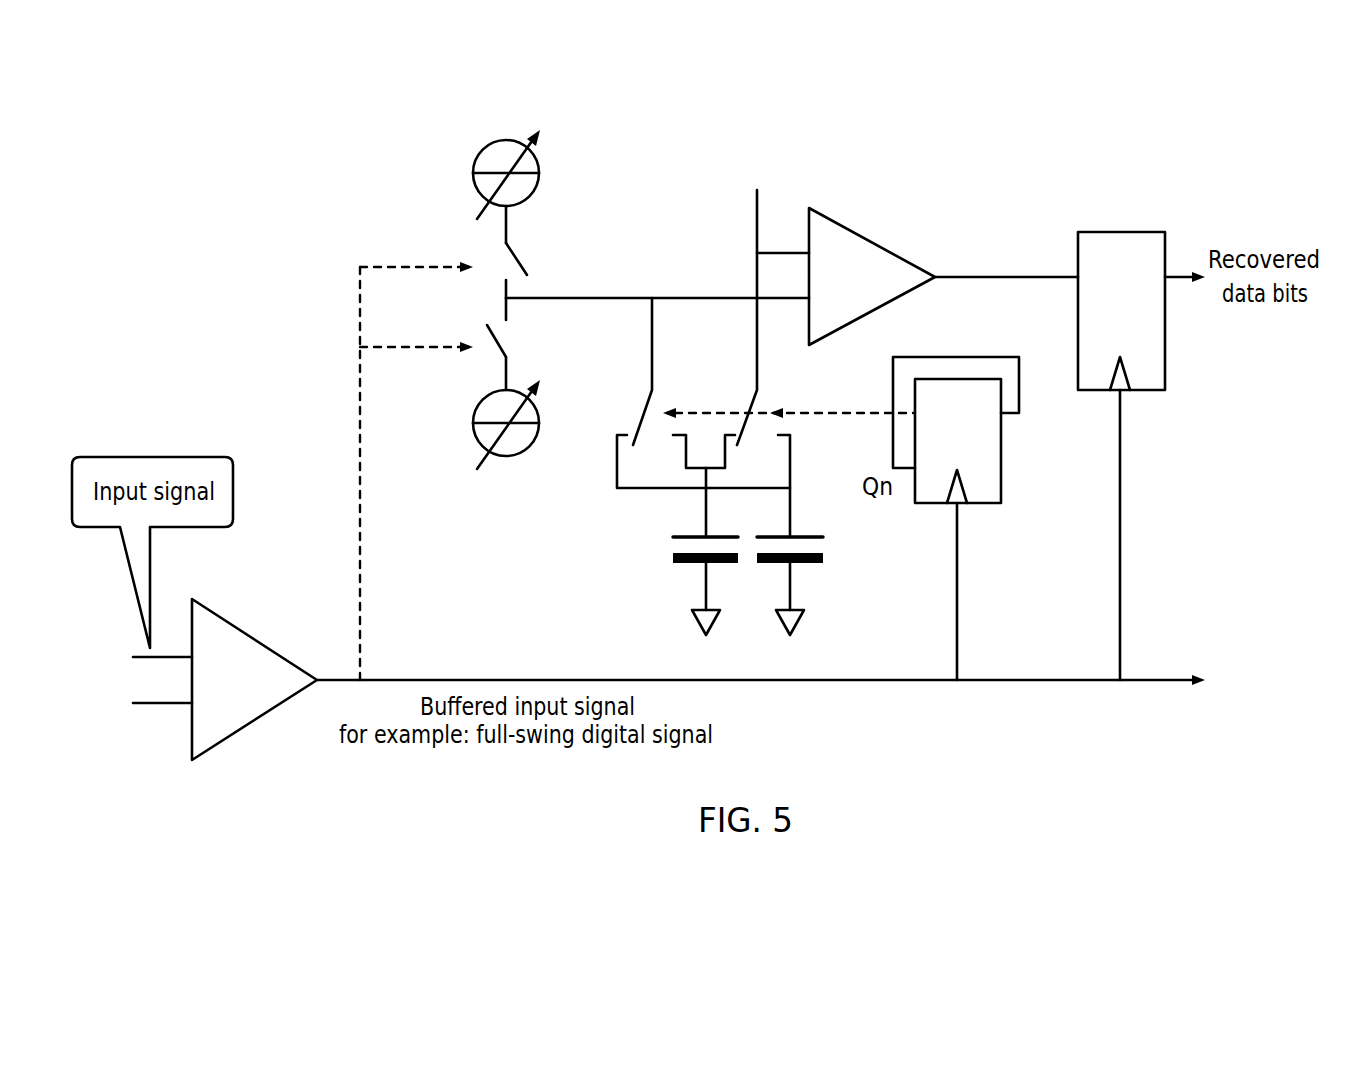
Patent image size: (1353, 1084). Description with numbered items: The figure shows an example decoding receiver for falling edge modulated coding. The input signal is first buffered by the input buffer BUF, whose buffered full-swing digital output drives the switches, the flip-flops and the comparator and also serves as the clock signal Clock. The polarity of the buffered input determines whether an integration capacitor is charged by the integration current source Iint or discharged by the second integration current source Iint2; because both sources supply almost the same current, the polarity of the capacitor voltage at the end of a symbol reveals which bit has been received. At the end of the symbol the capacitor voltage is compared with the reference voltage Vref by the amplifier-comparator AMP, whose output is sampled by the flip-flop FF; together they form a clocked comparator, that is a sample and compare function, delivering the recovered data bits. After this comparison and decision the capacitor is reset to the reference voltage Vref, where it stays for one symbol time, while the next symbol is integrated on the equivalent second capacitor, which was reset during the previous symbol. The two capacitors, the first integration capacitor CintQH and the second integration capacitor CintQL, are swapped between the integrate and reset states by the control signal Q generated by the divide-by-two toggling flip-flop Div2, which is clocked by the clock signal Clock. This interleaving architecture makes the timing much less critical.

The integration current source Iint is at (552, 148).
The second integration current source Iint2 is at (552, 395).
The reference voltage Vref is at (772, 302).
The amplifier-comparator AMP is at (872, 276).
The flip-flop FF is at (1121, 311).
The 2-divider toggling flip-flop Div2 is at (956, 413).
The control signal Q is at (789, 399).
The first integration capacitor CintQH is at (662, 551).
The second integration capacitor CintQL is at (831, 561).
The input buffer BUF is at (225, 679).
The clock signal Clock is at (792, 680).